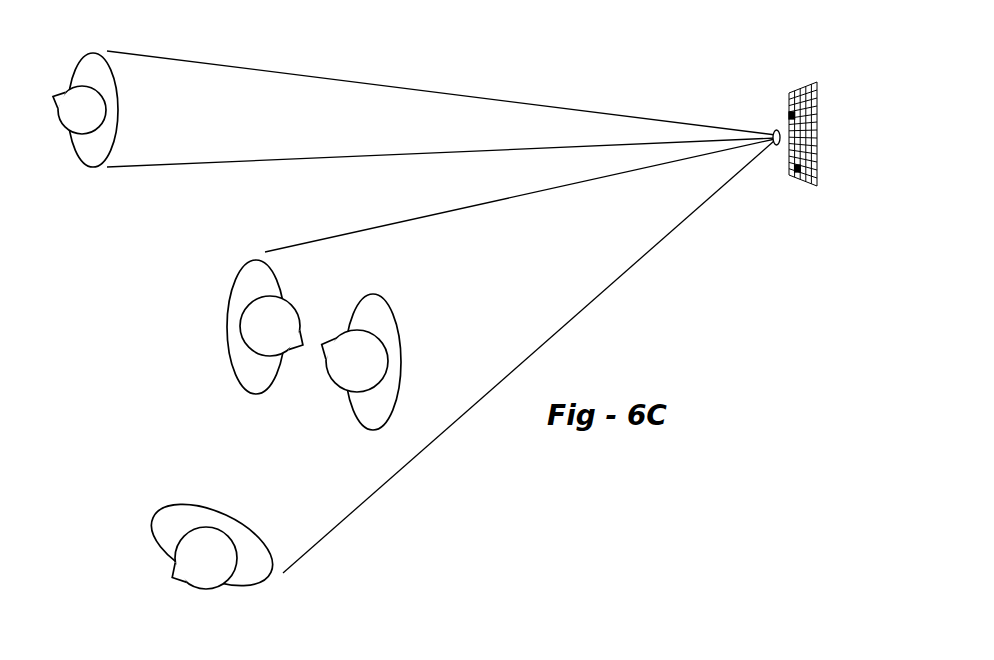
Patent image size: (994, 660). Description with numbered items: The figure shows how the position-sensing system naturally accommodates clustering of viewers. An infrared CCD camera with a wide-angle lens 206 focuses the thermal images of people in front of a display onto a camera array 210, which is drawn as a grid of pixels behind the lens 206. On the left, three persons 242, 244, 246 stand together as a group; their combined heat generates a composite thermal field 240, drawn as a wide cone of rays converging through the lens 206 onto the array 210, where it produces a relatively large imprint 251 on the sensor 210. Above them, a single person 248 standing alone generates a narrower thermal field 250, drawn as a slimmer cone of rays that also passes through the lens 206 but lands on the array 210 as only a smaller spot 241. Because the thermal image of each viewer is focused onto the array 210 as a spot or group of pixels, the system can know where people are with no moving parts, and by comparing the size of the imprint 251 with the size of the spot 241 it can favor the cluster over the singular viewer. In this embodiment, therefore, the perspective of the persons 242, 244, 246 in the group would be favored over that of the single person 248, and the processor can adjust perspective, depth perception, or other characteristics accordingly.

The wide-angle lens 206 is at (777, 129).
The camera array 210 is at (812, 190).
The composite thermal field 240 is at (520, 356).
The person 242 is at (239, 327).
The person 244 is at (361, 380).
The person 246 is at (212, 536).
The single person 248 is at (82, 126).
The thermal field 250 is at (441, 109).
The imprint 251 is at (789, 118).
The spot 241 is at (795, 177).